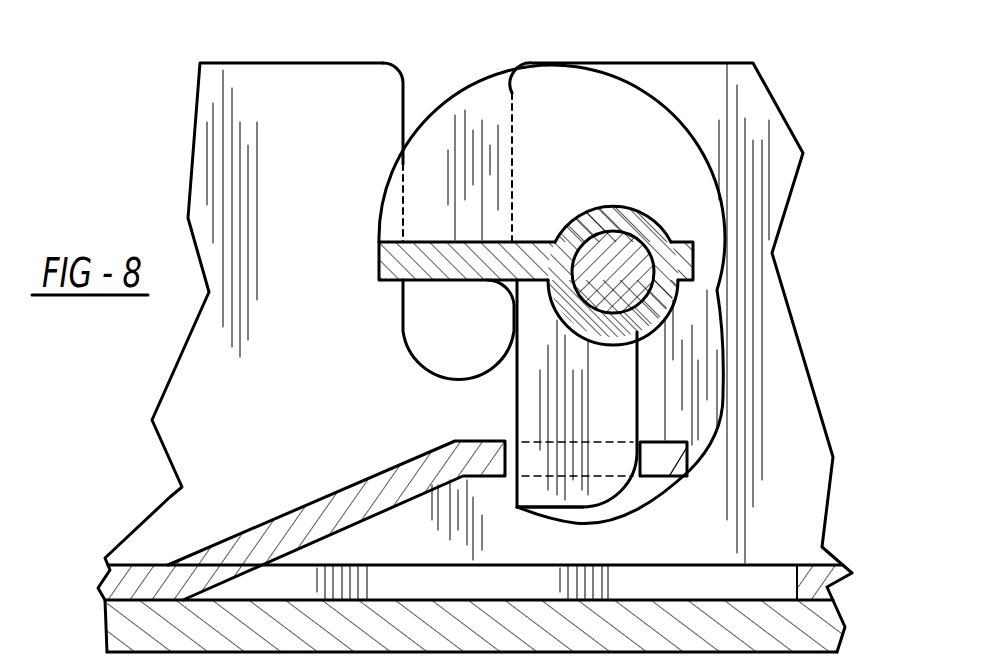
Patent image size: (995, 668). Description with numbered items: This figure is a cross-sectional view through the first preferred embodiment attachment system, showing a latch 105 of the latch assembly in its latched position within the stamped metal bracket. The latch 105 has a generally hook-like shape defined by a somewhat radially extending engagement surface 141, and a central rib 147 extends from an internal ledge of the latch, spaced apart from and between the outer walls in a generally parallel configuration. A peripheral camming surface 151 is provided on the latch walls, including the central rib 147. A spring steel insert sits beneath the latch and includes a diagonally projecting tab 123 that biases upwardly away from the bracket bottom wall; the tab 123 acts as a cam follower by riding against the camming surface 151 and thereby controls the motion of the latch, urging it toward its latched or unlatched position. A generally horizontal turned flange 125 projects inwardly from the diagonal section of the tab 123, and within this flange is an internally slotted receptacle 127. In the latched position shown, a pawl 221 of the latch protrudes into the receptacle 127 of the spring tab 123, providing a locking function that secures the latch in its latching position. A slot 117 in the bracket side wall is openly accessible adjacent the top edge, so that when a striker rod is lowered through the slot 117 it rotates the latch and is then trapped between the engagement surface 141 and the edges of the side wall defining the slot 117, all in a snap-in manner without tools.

The latch 105 is at (680, 197).
The slot 117 is at (403, 120).
The tab 123 is at (357, 483).
The turned flange 125 is at (650, 442).
The slotted receptacle 127 is at (660, 452).
The engagement surface 141 is at (458, 280).
The central rib 147 is at (560, 396).
The camming surface 151 is at (640, 363).
The pawl 221 is at (583, 507).